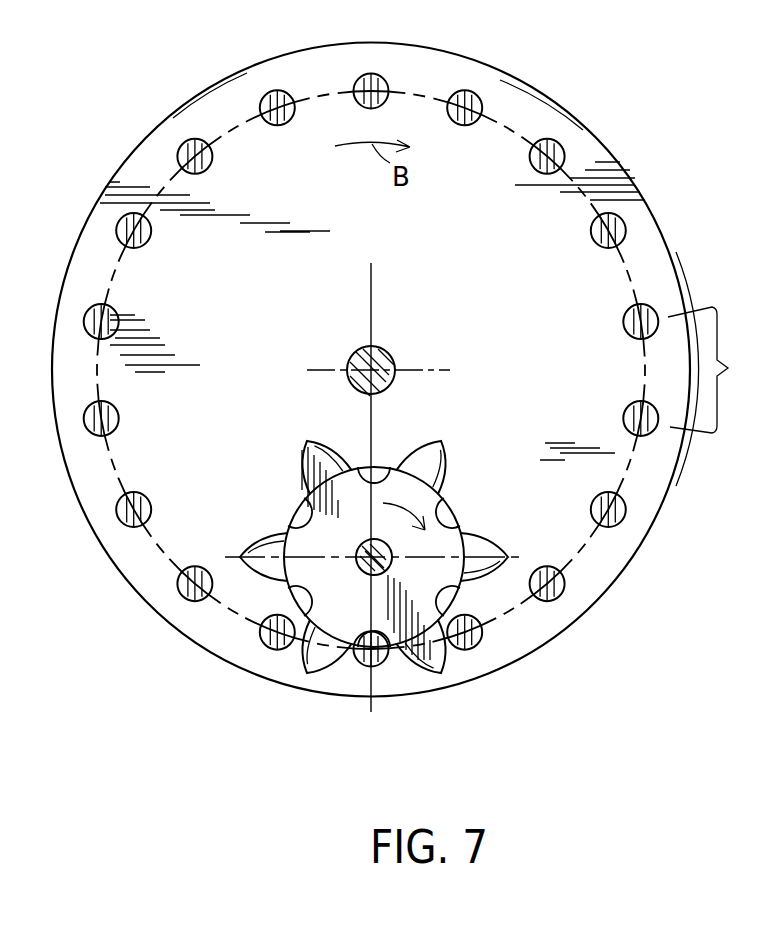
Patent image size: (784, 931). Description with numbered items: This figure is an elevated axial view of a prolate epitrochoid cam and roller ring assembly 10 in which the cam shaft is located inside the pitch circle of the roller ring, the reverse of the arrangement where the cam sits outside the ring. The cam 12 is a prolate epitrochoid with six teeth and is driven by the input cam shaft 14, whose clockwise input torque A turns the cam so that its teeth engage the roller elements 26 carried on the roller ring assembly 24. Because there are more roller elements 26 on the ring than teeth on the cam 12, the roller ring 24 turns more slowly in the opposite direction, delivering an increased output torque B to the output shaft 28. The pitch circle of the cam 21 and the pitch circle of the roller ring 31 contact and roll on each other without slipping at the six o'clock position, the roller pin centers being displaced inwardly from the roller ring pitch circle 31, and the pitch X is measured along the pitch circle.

The prolate epitrochoid cam and roller ring assembly 10 is at (728, 172).
The cam 12 is at (427, 670).
The input cam shaft 14 is at (360, 566).
The pitch circle of the cam 21 is at (297, 660).
The roller ring assembly 24 is at (247, 163).
The roller elements 26 is at (482, 110).
The output shaft 28 is at (357, 353).
The pitch circle of the roller ring 31 is at (527, 603).